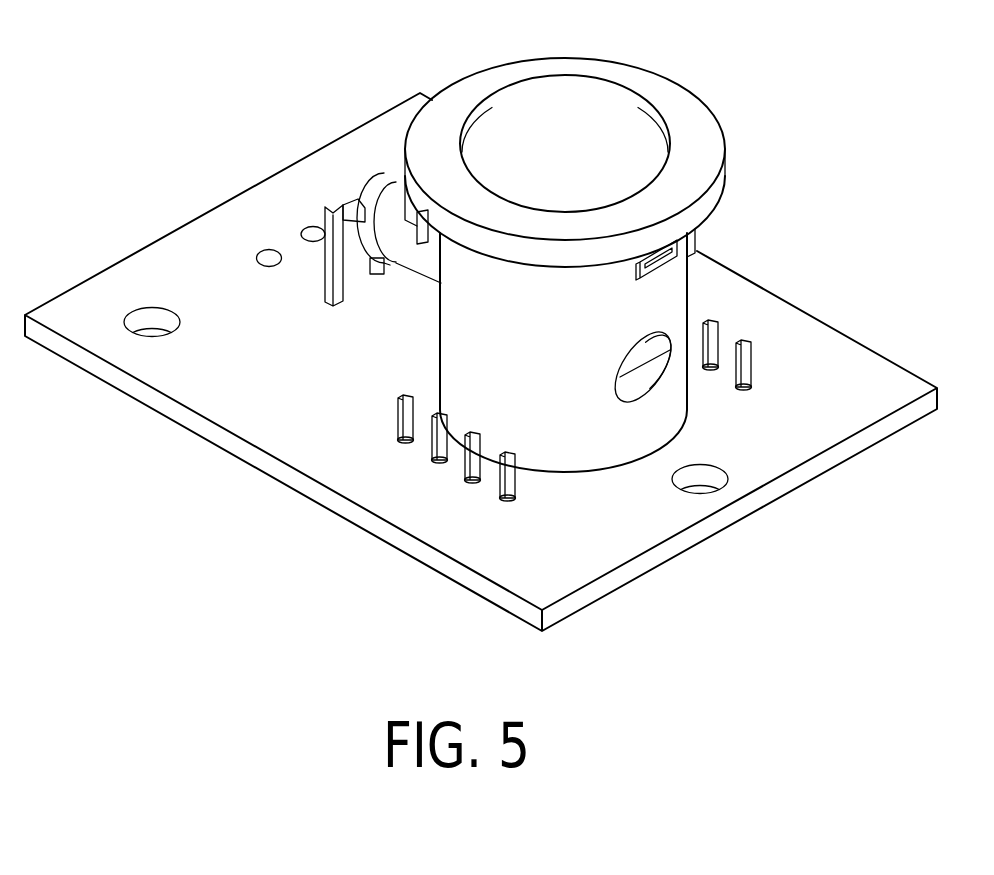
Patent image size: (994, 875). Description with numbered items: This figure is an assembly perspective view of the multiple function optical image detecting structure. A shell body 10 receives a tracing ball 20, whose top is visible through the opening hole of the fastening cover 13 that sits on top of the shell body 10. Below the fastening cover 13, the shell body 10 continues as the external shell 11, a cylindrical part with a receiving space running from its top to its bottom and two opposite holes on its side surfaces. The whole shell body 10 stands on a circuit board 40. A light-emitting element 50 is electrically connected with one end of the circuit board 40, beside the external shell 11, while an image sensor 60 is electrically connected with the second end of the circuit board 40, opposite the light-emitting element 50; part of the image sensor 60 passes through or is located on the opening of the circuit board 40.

The shell body 10 is at (648, 265).
The external shell 11 is at (637, 347).
The fastening cover 13 is at (739, 180).
The tracing ball 20 is at (622, 81).
The circuit board 40 is at (219, 194).
The light-emitting element 50 is at (356, 188).
The image sensor 60 is at (764, 353).